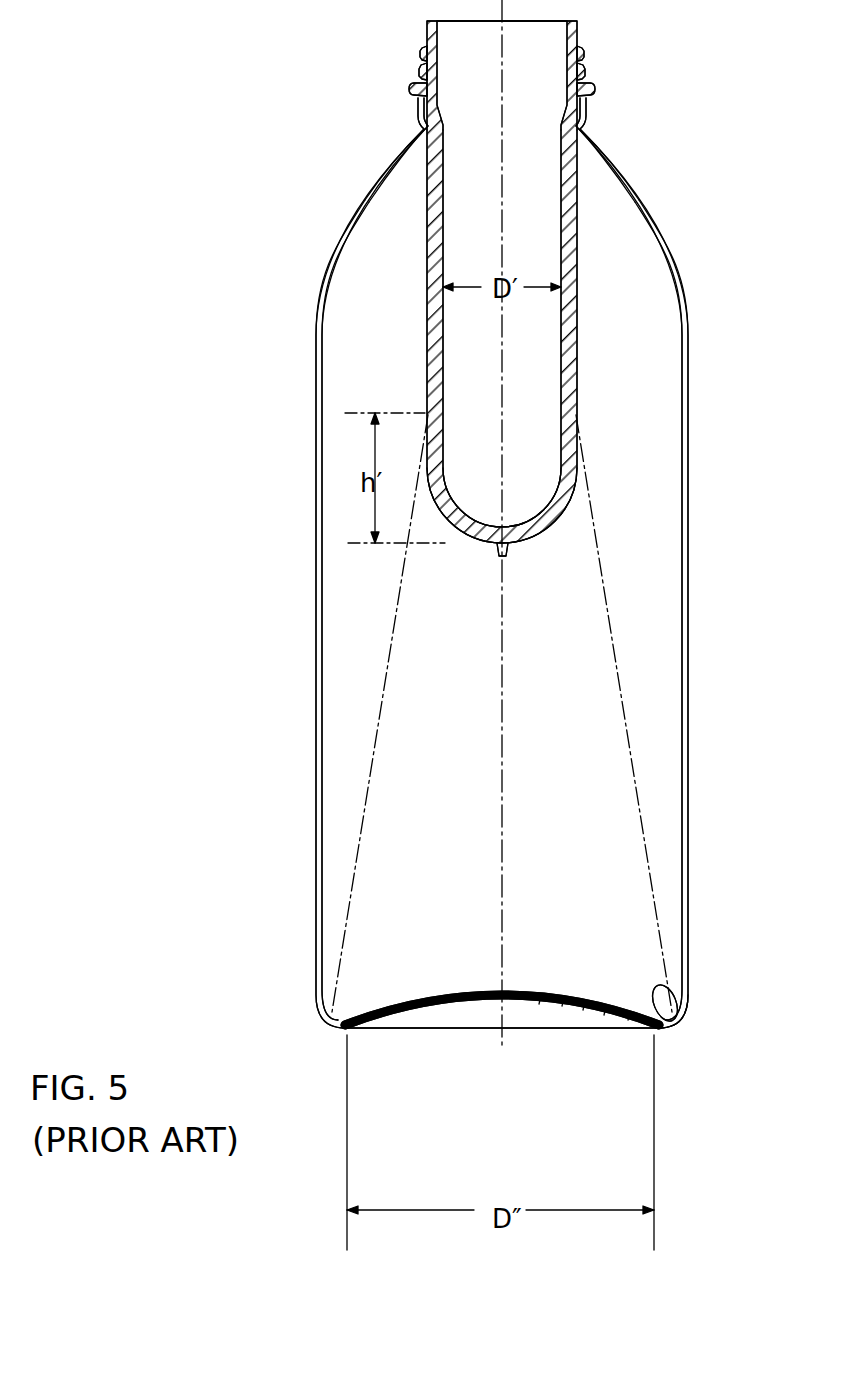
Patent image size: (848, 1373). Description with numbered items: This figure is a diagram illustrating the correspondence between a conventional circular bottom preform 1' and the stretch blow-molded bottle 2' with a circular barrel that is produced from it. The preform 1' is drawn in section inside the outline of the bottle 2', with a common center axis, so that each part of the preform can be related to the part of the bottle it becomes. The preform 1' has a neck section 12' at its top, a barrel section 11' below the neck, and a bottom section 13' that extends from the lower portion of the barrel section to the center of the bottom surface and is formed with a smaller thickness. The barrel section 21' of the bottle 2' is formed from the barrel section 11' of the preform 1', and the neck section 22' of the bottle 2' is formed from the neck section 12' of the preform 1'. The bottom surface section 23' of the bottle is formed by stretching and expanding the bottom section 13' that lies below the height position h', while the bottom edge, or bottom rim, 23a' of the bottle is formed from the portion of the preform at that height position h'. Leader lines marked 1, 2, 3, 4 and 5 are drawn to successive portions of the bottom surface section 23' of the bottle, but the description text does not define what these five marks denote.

The preform 1' is at (473, 288).
The barrel section of the preform 11' is at (538, 336).
The neck section of the preform 12' is at (544, 75).
The bottom section of the preform 13' is at (541, 512).
The bottle 2' is at (454, 563).
The barrel section of the bottle 21' is at (454, 614).
The neck section of the bottle 22' is at (487, 125).
The bottom surface section of the bottle 23' is at (449, 990).
The bottom edge (bottom rim) 23a' is at (721, 994).
The bottom layer region 1 is at (526, 1074).
The bottom layer region 2 is at (550, 1066).
The bottom layer region 3 is at (583, 1010).
The bottom layer region 4 is at (604, 1015).
The bottom layer region 5 is at (628, 1020).